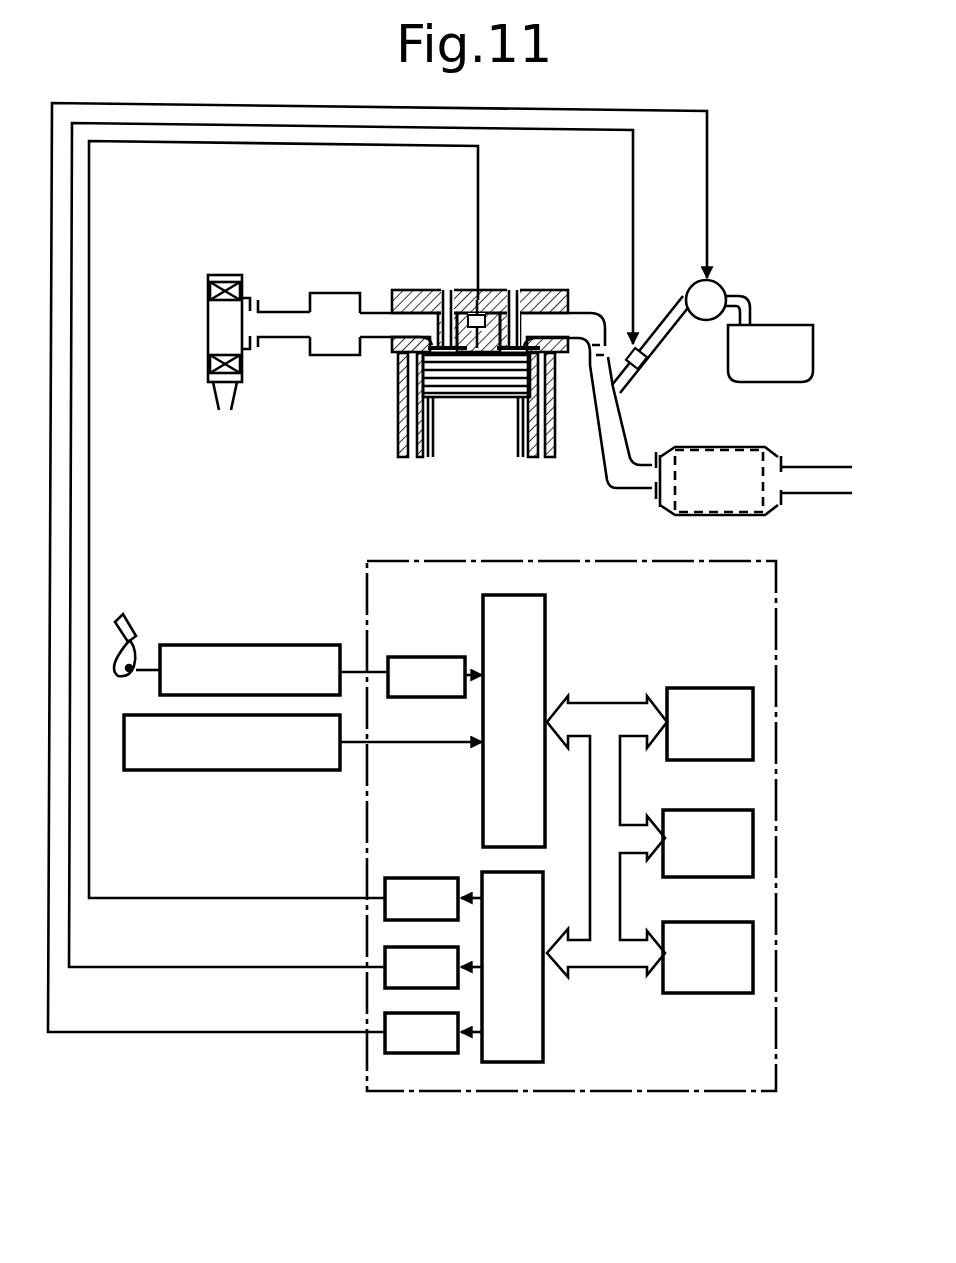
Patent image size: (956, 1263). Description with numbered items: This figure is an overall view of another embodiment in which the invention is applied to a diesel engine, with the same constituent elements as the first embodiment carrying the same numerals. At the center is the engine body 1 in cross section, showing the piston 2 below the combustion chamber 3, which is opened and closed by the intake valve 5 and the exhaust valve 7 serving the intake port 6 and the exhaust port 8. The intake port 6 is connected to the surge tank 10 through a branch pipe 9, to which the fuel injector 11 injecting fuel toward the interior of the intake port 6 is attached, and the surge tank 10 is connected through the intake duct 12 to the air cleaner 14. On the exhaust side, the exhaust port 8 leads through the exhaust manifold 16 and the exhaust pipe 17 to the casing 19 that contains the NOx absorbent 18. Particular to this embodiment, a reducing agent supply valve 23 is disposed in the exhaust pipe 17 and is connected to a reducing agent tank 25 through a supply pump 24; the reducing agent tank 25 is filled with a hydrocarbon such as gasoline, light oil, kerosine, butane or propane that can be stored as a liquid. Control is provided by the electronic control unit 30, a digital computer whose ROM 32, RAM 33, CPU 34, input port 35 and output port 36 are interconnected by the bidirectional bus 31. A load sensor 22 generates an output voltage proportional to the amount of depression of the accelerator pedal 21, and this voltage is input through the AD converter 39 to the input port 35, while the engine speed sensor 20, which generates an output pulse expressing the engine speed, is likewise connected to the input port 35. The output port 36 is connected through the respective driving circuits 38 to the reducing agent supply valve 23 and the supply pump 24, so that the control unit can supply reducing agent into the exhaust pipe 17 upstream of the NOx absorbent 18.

The engine body 1 is at (553, 438).
The piston 2 is at (497, 439).
The combustion chamber 3 is at (448, 405).
The intake valve 5 is at (428, 290).
The intake port 6 is at (393, 357).
The exhaust valve 7 is at (533, 300).
The exhaust port 8 is at (553, 313).
The branch pipe 9 is at (370, 339).
The surge tank 10 is at (322, 359).
The fuel injector 11 is at (482, 299).
The intake duct 12 is at (275, 339).
The air cleaner 14 is at (208, 327).
The exhaust manifold 16 is at (584, 318).
The exhaust pipe 17 is at (621, 415).
The NOx absorbent 18 is at (693, 450).
The casing 19 is at (767, 448).
The engine speed sensor 20 is at (202, 771).
The accelerator pedal 21 is at (126, 620).
The load sensor 22 is at (248, 645).
The reducing agent supply valve 23 is at (646, 360).
The supply pump 24 is at (723, 284).
The reducing agent tank 25 is at (800, 325).
The electronic control unit 30 is at (779, 590).
The bidirectional bus 31 is at (611, 702).
The ROM 32 is at (718, 688).
The RAM 33 is at (718, 810).
The CPU 34 is at (712, 922).
The input port 35 is at (545, 598).
The output port 36 is at (545, 1040).
The driving circuits 38 is at (385, 880).
The AD converter 39 is at (410, 656).